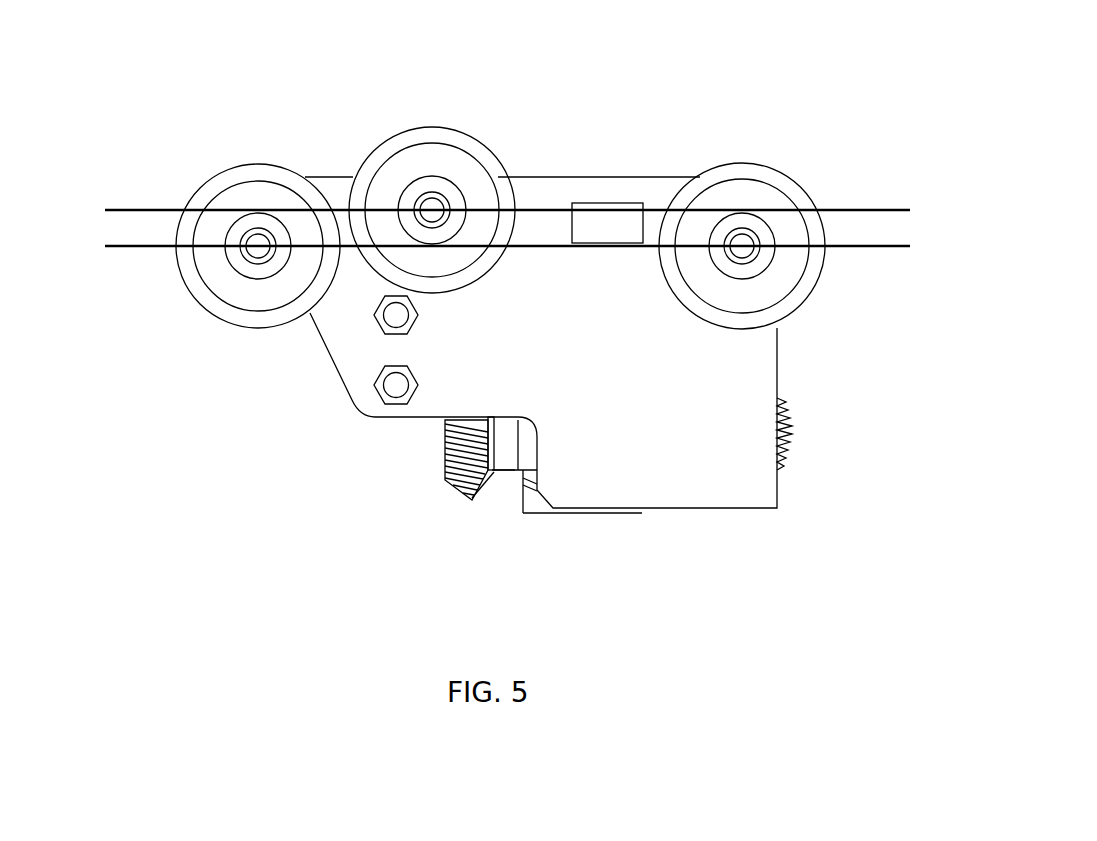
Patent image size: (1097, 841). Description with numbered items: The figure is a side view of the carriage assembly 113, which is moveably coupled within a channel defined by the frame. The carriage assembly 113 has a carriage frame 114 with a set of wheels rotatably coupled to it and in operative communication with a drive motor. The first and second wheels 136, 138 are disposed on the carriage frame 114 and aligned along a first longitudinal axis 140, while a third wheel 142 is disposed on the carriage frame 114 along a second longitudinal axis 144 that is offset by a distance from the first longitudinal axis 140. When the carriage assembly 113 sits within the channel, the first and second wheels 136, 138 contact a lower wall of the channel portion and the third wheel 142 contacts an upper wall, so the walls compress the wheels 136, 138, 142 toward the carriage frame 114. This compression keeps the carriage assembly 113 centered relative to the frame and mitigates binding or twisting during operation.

The carriage assembly 113 is at (670, 84).
The carriage frame 114 is at (585, 177).
The first wheel 136 is at (255, 163).
The second wheel 138 is at (787, 177).
The first longitudinal axis 140 is at (125, 248).
The third wheel 142 is at (432, 128).
The second longitudinal axis 144 is at (160, 208).